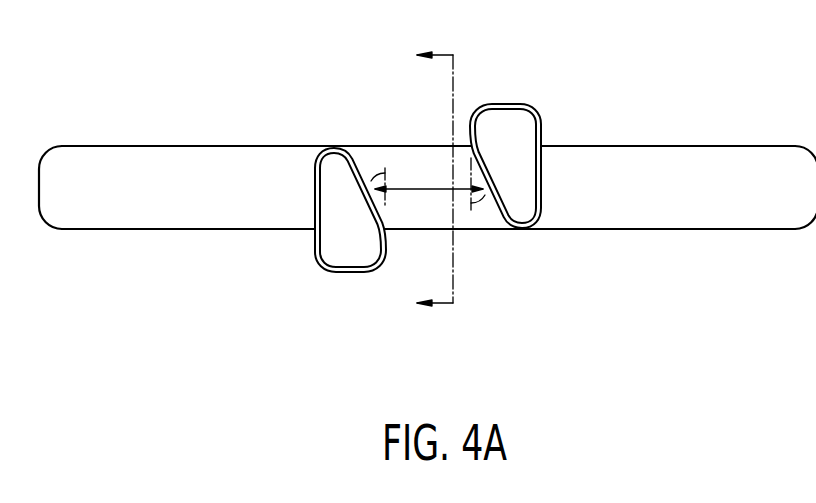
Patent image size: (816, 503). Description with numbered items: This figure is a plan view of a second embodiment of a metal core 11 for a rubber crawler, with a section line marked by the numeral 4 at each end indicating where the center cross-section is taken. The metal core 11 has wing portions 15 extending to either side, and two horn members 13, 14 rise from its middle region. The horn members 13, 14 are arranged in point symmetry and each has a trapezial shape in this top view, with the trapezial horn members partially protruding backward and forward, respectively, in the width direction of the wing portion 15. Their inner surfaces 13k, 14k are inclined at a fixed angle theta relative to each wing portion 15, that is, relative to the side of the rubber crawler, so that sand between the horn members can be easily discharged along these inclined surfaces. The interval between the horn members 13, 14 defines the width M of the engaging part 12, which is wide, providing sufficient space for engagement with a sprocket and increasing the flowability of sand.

The metal core 11 is at (655, 93).
The engaging part 12 is at (403, 198).
The horn member 13 is at (338, 166).
The inner surface 13k is at (366, 160).
The horn member 14 is at (531, 105).
The inner surface 14k is at (486, 225).
The wing portion 15 is at (173, 217).
The section line 4- 4 is at (435, 180).